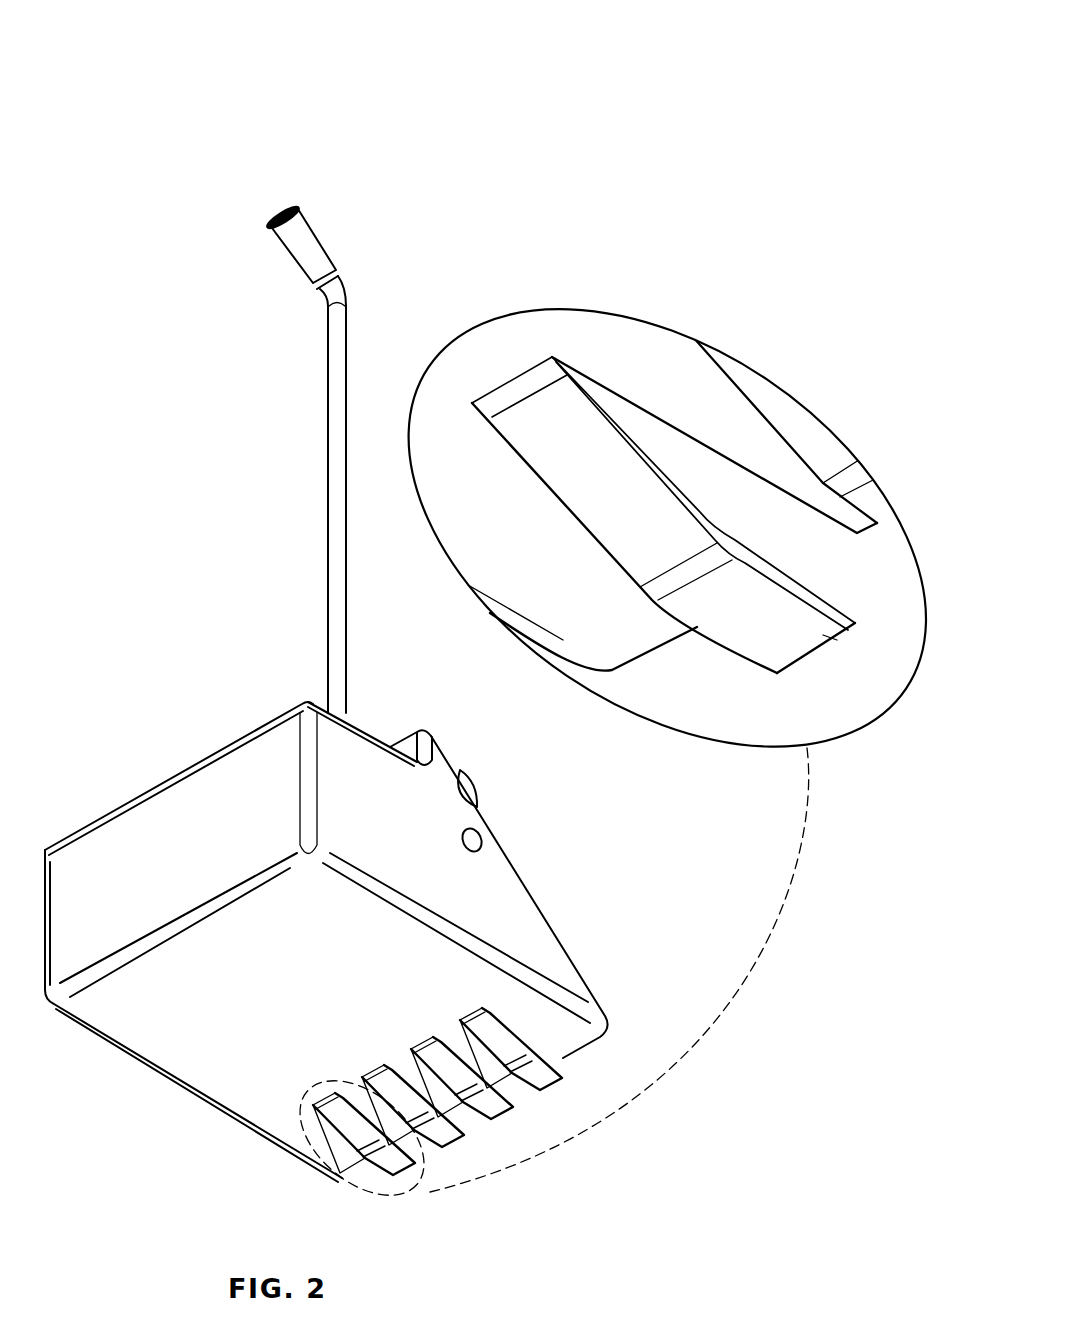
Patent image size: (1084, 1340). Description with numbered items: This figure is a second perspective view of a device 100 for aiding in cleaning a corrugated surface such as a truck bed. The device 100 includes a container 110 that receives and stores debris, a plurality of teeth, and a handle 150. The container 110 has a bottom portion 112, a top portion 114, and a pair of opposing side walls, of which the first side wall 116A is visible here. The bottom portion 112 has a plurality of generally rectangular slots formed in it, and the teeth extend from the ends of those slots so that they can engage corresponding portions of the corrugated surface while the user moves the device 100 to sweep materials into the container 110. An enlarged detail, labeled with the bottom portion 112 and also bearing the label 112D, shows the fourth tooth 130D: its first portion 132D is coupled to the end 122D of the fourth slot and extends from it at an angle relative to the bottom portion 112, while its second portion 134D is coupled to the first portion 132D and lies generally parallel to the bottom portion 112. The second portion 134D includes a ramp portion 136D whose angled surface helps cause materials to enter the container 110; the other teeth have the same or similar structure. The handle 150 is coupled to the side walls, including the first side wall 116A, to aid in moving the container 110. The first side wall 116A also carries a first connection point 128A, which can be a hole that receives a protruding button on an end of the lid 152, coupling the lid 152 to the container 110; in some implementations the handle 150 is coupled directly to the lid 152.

The device 100 is at (193, 98).
The container 110 is at (187, 725).
The bottom portion 112 is at (202, 1065).
The top portion 114 is at (160, 783).
The first side wall 116A is at (517, 907).
The first connection point 128A is at (473, 833).
The handle 150 is at (328, 452).
The lid 152 is at (472, 780).
The end of the fourth slot 122D is at (525, 380).
The hook tab (detail) 112D is at (453, 518).
The first portion 132D is at (582, 497).
The second portion 134D is at (717, 607).
The ramp portion 136D is at (827, 635).
The fourth tooth 130D is at (827, 673).